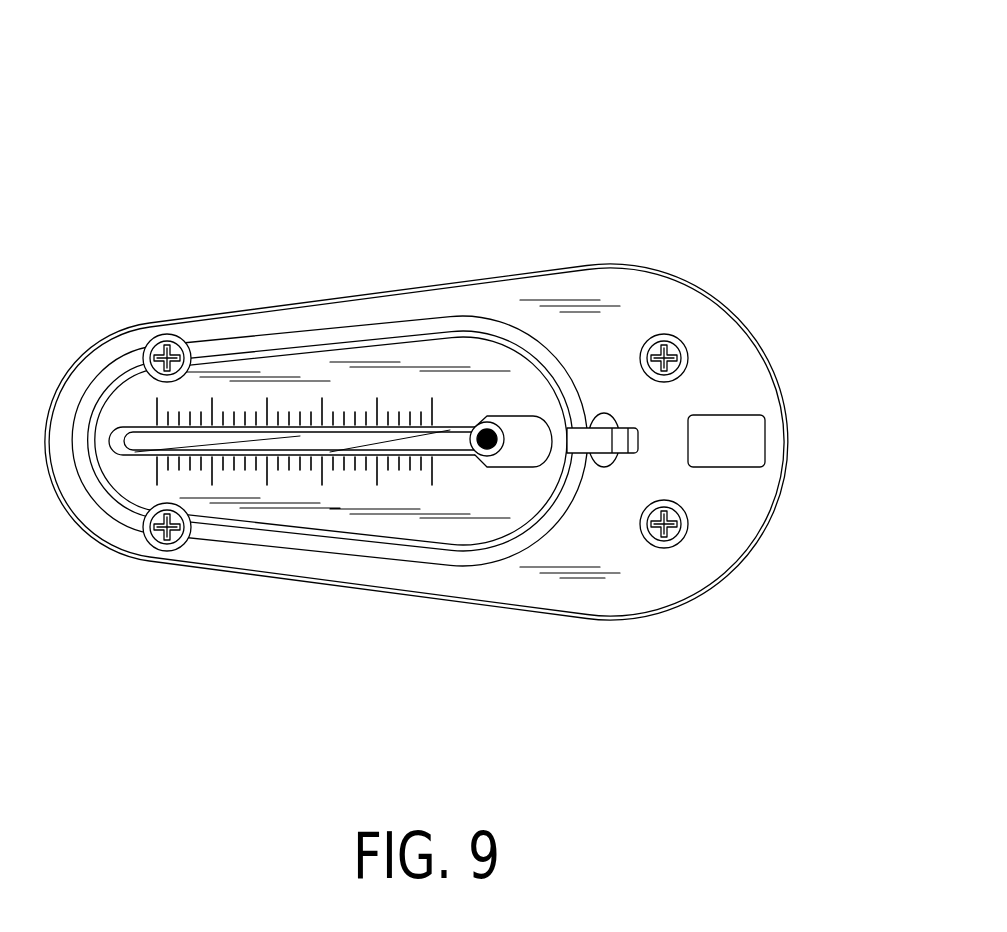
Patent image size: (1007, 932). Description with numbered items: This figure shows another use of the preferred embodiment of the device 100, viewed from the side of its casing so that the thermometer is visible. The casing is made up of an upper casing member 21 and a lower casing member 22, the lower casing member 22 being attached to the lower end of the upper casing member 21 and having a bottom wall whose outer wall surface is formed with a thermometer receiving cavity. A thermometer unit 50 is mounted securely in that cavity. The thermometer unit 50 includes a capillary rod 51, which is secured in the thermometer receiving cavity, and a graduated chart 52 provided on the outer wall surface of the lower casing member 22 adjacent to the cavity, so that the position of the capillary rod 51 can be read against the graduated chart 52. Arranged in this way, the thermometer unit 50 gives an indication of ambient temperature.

The measuring gauge assembly 100 is at (454, 357).
The upper casing member 21 is at (742, 377).
The lower casing member 22 is at (730, 309).
The thermometer unit 50 is at (508, 450).
The capillary rod 51 is at (467, 424).
The graduated chart 52 is at (430, 474).